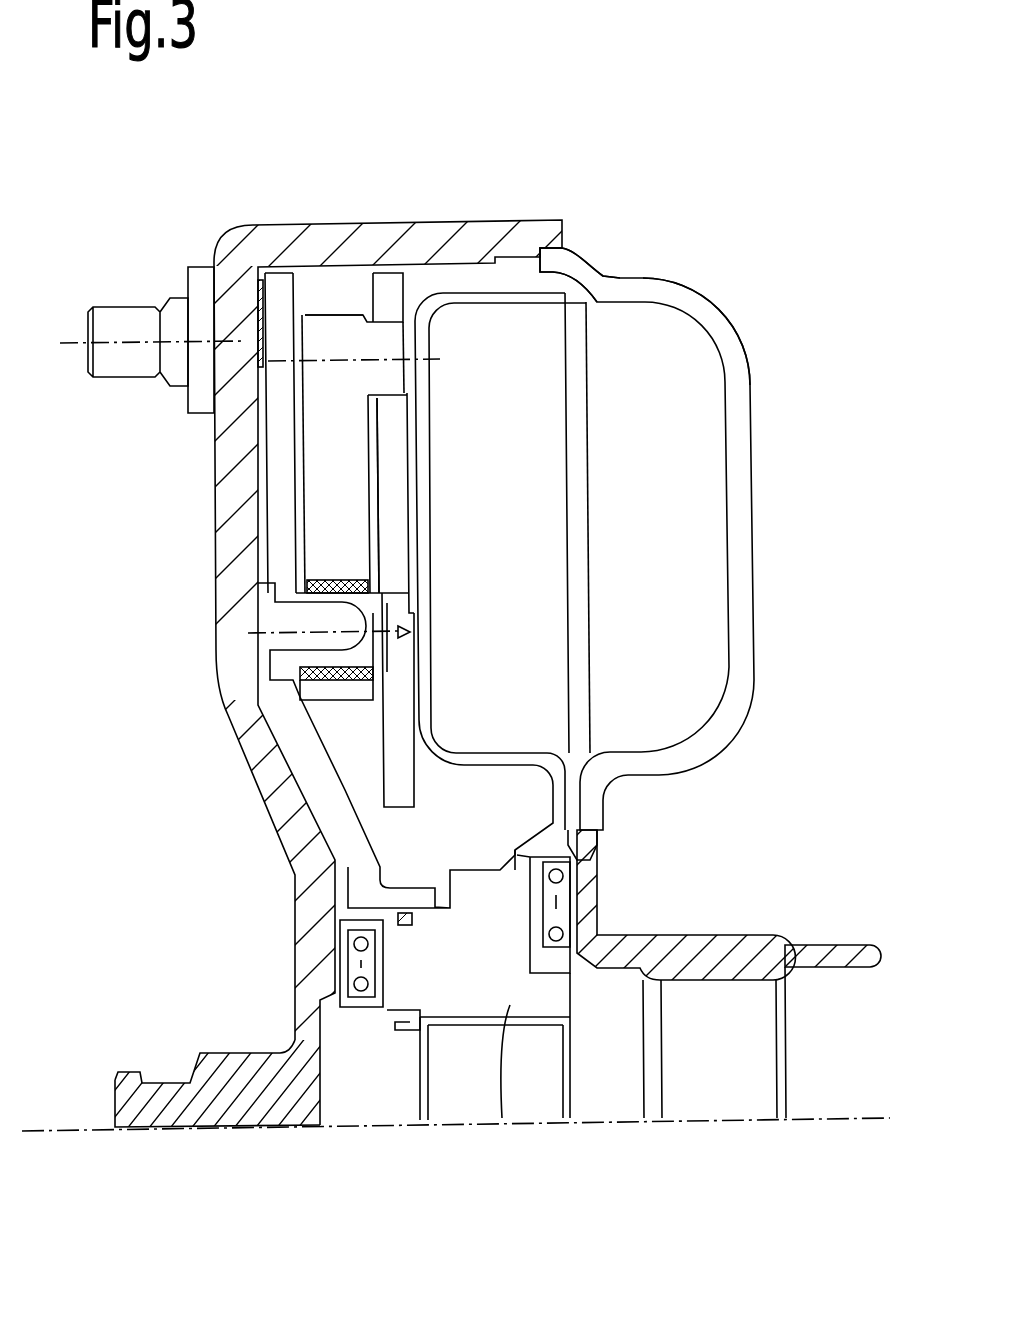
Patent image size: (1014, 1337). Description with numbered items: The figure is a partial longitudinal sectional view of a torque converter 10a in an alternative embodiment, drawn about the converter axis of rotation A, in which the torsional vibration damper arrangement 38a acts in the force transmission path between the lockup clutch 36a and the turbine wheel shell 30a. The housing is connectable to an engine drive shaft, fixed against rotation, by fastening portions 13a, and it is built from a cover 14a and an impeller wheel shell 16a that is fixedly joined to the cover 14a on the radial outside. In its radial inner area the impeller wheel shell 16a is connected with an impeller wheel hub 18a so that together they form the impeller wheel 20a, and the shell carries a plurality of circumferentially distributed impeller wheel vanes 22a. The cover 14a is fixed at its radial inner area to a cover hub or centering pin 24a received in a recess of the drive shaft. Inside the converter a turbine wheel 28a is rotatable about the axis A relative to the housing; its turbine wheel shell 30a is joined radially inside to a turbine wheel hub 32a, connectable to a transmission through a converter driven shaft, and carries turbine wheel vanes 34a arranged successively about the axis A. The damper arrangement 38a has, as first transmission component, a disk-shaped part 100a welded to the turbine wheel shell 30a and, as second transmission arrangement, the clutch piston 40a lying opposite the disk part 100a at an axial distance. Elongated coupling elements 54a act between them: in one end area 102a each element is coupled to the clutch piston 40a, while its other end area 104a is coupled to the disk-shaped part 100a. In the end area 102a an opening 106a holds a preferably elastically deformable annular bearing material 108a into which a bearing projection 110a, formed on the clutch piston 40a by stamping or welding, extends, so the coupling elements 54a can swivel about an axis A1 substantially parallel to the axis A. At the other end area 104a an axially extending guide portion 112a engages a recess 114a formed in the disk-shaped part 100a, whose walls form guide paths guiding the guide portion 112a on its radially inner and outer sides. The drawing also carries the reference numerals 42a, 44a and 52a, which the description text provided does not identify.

The torque converter 10a is at (592, 180).
The fastening portions 13a is at (123, 303).
The cover 14a is at (500, 215).
The impeller wheel shell 16a is at (723, 317).
The impeller wheel hub 18a is at (727, 935).
The impeller wheel 20a is at (790, 642).
The impeller wheel vanes 22a is at (680, 483).
The cover hub or centering pin 24a is at (215, 1048).
The turbine wheel 28a is at (427, 827).
The turbine wheel shell 30a is at (455, 292).
The turbine wheel hub 32a is at (488, 997).
The turbine wheel vanes 34a is at (515, 518).
The lockup clutch 36a is at (255, 392).
The torsional vibration damper arrangement 38a is at (330, 285).
The clutch piston 40a is at (273, 518).
The bearing 42a is at (282, 1124).
The sealing strip 44a is at (258, 275).
The sleeve 52a is at (440, 538).
The coupling elements 54a is at (337, 468).
The disk-shaped part 100a is at (398, 583).
The end area 102a is at (305, 690).
The other end area 104a is at (303, 290).
The opening 106a is at (400, 712).
The annular bearing material 108a is at (330, 705).
The bearing projection 110a is at (290, 645).
The guide portion 112a is at (400, 342).
The recess 114a is at (400, 433).
The axis of rotation A is at (836, 1120).
The swivel axis A1 is at (250, 624).